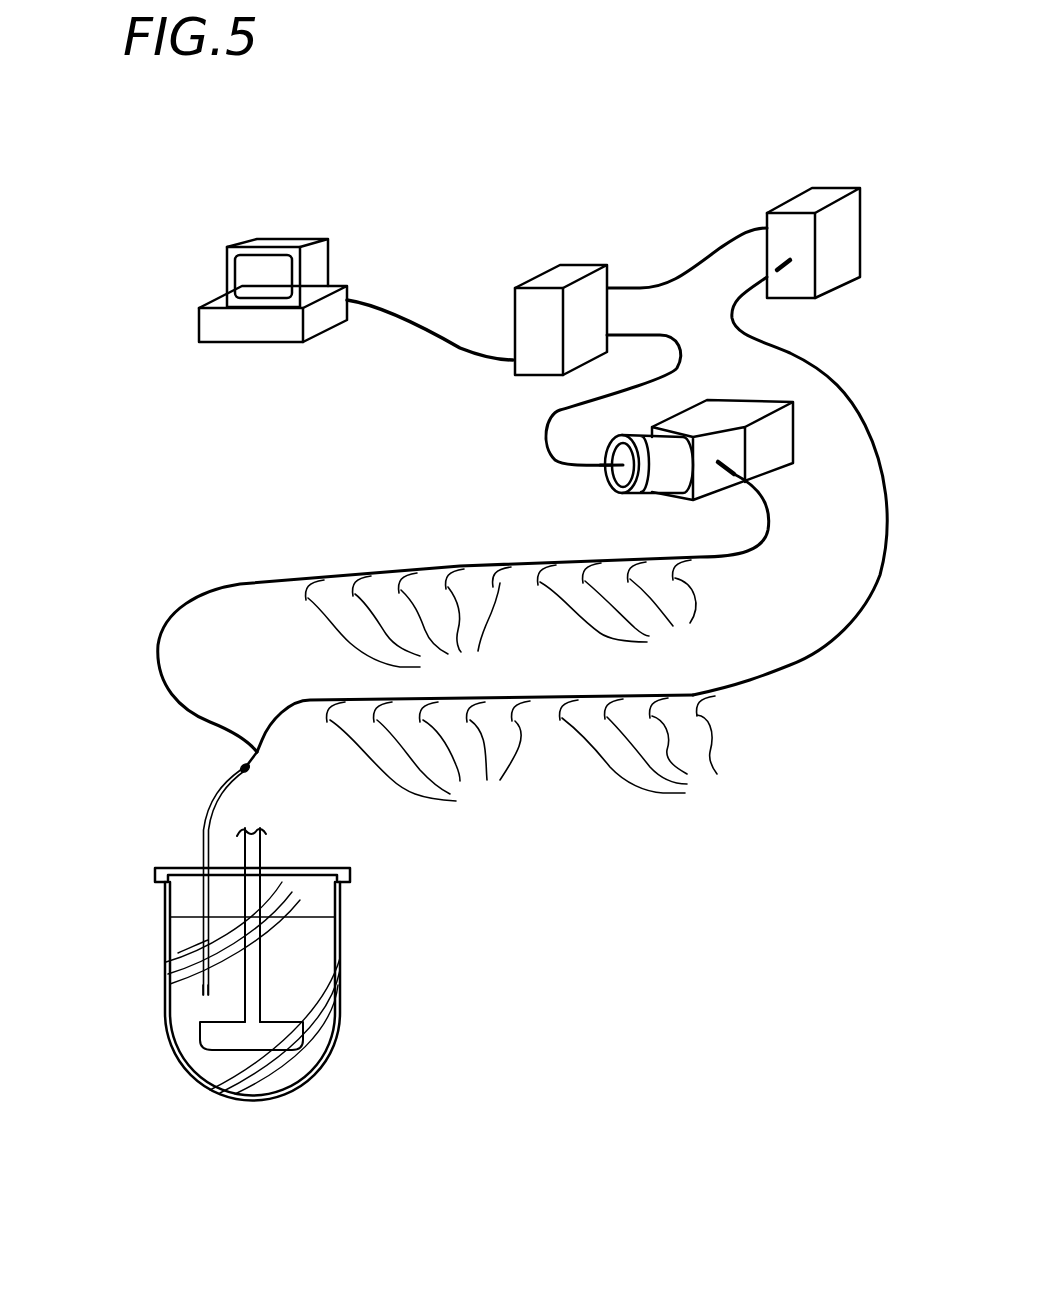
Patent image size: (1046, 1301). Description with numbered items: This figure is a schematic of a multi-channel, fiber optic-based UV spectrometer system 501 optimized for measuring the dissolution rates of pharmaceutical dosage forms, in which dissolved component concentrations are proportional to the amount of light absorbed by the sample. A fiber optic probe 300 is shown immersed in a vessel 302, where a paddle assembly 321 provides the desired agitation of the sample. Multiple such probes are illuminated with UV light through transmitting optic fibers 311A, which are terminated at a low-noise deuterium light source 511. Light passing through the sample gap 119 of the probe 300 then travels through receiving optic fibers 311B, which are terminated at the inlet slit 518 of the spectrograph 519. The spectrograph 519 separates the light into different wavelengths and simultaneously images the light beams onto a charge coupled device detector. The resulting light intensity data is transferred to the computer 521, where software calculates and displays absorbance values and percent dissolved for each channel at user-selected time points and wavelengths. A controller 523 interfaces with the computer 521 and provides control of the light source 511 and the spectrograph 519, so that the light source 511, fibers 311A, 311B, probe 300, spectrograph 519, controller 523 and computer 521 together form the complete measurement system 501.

The computer 521 is at (284, 242).
The controller 523 is at (578, 262).
The low-noise deuterium light source 511 is at (830, 187).
The spectrograph 519 is at (758, 398).
The inlet slit 518 is at (712, 475).
The receiving optic fibers 311B is at (116, 720).
The transmitting optic fibers 311A is at (263, 628).
The fiber optic probe 300 is at (206, 806).
The sample gap 119 is at (194, 998).
The vessel 302 is at (188, 1080).
The paddle assembly 321 is at (307, 1037).
The multi-channel, fiber optic-based UV spectrometer system 501 is at (648, 841).